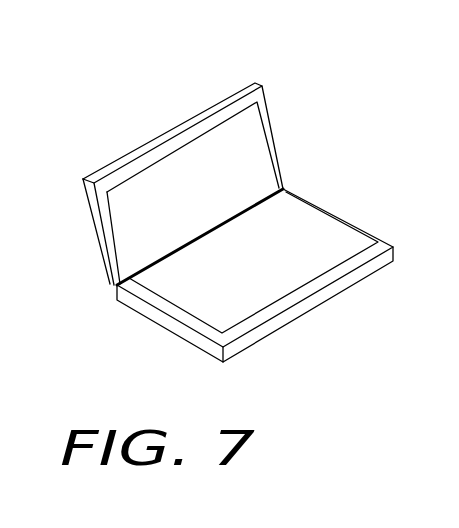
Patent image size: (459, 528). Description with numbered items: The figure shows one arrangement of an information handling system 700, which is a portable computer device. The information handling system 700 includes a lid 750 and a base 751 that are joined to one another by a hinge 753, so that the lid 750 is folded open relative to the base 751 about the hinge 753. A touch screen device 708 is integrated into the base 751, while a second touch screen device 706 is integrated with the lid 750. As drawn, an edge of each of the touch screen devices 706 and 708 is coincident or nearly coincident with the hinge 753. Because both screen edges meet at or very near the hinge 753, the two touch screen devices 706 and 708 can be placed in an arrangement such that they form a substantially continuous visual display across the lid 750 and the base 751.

The information handling system 700 is at (113, 63).
The lid 750 is at (103, 170).
The touch screen device 706 is at (247, 147).
The touch screen device 708 is at (302, 247).
The base 751 is at (393, 245).
The hinge 753 is at (118, 287).